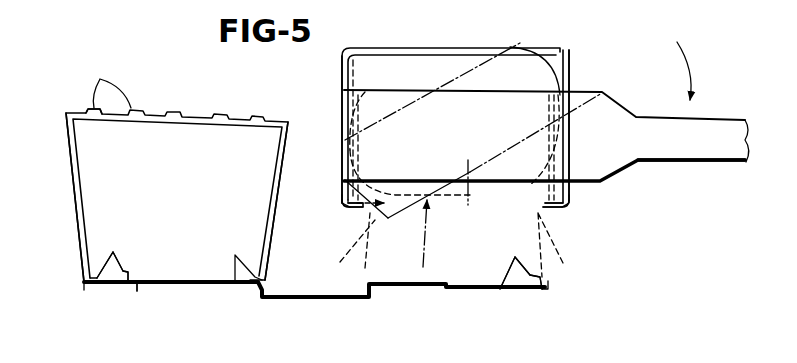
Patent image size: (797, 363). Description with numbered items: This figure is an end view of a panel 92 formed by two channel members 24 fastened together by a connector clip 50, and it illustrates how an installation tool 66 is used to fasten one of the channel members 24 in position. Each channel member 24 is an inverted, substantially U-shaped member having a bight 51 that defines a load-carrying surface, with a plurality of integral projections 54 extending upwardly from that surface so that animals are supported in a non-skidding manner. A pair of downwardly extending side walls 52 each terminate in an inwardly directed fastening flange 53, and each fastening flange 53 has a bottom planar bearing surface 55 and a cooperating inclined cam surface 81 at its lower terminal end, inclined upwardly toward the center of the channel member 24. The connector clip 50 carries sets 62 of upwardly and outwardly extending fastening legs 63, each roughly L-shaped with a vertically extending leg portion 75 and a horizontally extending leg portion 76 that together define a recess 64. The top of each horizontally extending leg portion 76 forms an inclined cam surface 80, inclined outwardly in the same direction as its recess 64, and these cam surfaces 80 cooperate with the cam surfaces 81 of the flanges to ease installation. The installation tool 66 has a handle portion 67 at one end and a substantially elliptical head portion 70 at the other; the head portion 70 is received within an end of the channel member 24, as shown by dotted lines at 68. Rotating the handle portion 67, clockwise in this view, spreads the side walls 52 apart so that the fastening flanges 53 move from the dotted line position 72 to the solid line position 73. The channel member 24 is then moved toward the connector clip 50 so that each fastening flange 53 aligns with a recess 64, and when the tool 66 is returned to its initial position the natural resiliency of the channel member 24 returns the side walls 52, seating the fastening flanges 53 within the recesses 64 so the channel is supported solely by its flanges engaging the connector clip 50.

The channel member 24 is at (66, 163).
The connector clip 50 is at (364, 313).
The bight 51 is at (162, 100).
The side wall 52 is at (72, 212).
The fastening flange 53 is at (104, 282).
The projection 54 is at (104, 81).
The bottom planar bearing surface 55 is at (100, 283).
The set of fastening legs 62 is at (196, 260).
The fastening leg 63 is at (113, 254).
The recess 64 is at (372, 290).
The installation tool 66 is at (653, 182).
The handle portion 67 is at (731, 122).
The head portion position within channel member 68 is at (392, 262).
The elliptical head portion 70 is at (470, 195).
The dotted line position of fastening flanges 72 is at (464, 256).
The solid line position of fastening flanges 73 is at (578, 250).
The vertically extending leg portion 75 is at (128, 289).
The horizontally extending leg portion 76 is at (116, 263).
The inclined cam surface 80 is at (103, 260).
The cooperating inclined cam surface 81 is at (112, 284).
The panel 92 is at (230, 58).